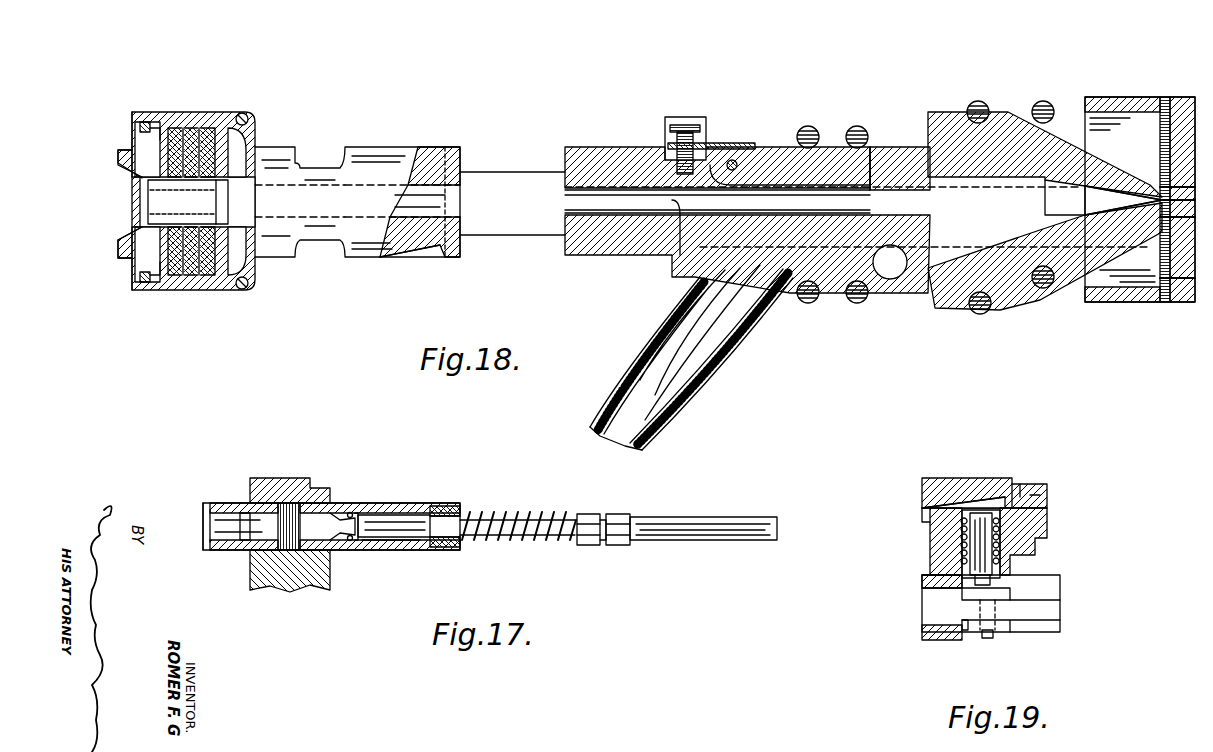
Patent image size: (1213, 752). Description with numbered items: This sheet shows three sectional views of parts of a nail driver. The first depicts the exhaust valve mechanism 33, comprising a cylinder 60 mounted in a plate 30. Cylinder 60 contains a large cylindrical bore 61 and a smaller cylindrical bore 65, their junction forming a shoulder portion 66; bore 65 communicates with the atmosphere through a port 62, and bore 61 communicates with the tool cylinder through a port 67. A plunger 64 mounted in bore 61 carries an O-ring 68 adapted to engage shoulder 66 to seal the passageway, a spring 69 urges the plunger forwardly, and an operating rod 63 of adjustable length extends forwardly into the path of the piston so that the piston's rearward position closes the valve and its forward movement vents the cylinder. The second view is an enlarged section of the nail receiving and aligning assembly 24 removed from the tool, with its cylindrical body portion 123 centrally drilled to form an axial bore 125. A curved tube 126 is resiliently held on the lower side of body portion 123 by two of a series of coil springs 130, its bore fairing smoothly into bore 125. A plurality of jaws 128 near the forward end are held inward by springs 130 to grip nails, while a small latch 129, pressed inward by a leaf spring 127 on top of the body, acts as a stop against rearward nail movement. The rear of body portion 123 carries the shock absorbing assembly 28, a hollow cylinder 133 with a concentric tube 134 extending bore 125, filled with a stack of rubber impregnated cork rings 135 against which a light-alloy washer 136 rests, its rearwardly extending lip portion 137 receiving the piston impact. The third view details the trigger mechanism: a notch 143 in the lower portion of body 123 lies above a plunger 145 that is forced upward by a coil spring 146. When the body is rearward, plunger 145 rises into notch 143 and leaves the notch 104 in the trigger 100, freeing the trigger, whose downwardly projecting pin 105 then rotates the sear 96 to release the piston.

In FIG. 18, the nail receiving and aligning assembly 24 is at (799, 97).
In FIG. 18, the shock absorbing assembly 28 is at (232, 97).
In FIG. 17, the plate 30 is at (288, 476).
In FIG. 17, the exhaust valve mechanism 33 is at (499, 483).
In FIG. 17, the cylinder 60 is at (395, 503).
In FIG. 17, the large cylindrical bore 61 is at (382, 547).
In FIG. 17, the port 62 is at (222, 505).
In FIG. 17, the operating rod 63 is at (705, 518).
In FIG. 17, the plunger 64 is at (428, 502).
In FIG. 17, the smaller cylindrical bore 65 is at (246, 533).
In FIG. 17, the shoulder portion 66 is at (350, 552).
In FIG. 17, the port 67 is at (360, 503).
In FIG. 17, the O-ring 68 is at (347, 512).
In FIG. 17, the spring 69 is at (522, 520).
In FIG. 19, the sear 96 is at (972, 630).
In FIG. 19, the trigger 100 is at (1045, 600).
In FIG. 19, the notch 104 is at (992, 598).
In FIG. 19, the pin 105 is at (992, 637).
In FIG. 18, the cylindrical body portion 123 is at (436, 152).
In FIG. 19, the cylindrical body portion 123 is at (942, 478).
In FIG. 18, the axial bore 125 is at (455, 200).
In FIG. 18, the tube 126 is at (690, 372).
In FIG. 18, the leaf spring 127 is at (728, 145).
In FIG. 18, the jaws 128 is at (1000, 113).
In FIG. 18, the latch 129 is at (828, 147).
In FIG. 18, the coil springs 130 is at (1058, 105).
In FIG. 18, the hollow cylinder 133 is at (218, 284).
In FIG. 18, the concentric tube 134 is at (168, 200).
In FIG. 18, the rubber impregnated cork rings 135 is at (178, 282).
In FIG. 18, the washer 136 is at (132, 256).
In FIG. 18, the lip portion 137 is at (126, 158).
In FIG. 18, the notch 143 is at (440, 250).
In FIG. 19, the notch 143 is at (968, 500).
In FIG. 19, the plunger 145 is at (1000, 503).
In FIG. 19, the coil spring 146 is at (966, 547).